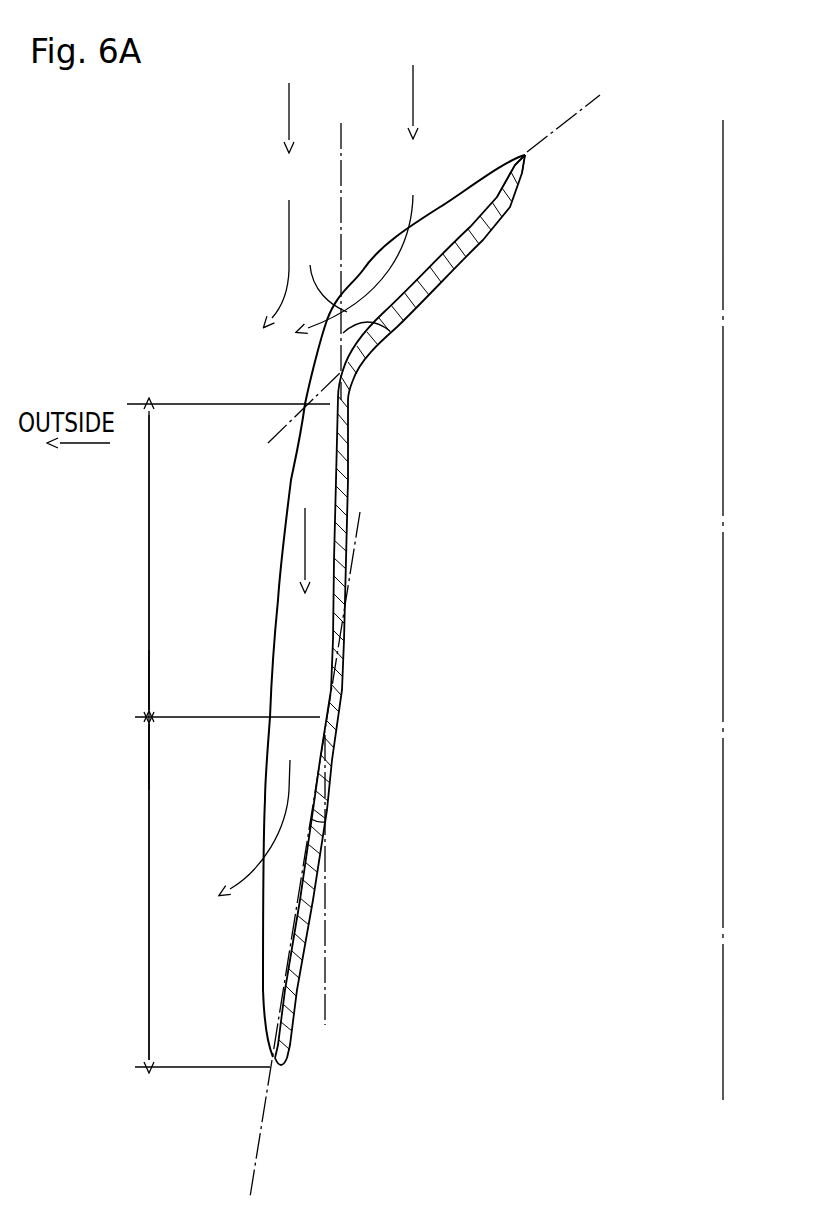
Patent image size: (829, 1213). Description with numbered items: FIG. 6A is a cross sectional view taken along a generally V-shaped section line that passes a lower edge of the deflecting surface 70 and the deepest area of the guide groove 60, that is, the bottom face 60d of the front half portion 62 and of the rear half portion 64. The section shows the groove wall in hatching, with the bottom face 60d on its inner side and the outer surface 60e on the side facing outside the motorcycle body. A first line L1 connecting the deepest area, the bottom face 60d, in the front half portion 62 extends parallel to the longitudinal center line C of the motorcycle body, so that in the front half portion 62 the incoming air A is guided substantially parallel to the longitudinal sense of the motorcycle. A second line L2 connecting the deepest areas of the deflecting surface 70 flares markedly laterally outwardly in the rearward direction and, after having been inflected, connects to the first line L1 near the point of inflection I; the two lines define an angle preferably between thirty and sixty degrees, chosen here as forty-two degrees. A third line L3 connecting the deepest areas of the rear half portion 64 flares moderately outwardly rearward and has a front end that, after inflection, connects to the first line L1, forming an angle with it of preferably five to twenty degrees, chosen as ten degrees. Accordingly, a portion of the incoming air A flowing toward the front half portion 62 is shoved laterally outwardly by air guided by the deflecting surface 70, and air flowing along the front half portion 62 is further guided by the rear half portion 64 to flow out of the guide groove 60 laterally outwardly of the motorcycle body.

The deflecting surface 70 is at (487, 185).
The guide groove 60 is at (81, 613).
The front half portion 62 is at (149, 631).
The rear half portion 64 is at (149, 761).
The outer surface of blade 60e is at (300, 480).
The bottom face 60d is at (348, 470).
The first line L1 is at (335, 548).
The second line L2 is at (461, 240).
The third line L3 is at (316, 782).
The longitudinal center line C is at (723, 175).
The incoming air A is at (289, 95).
The point of inflection I is at (314, 259).